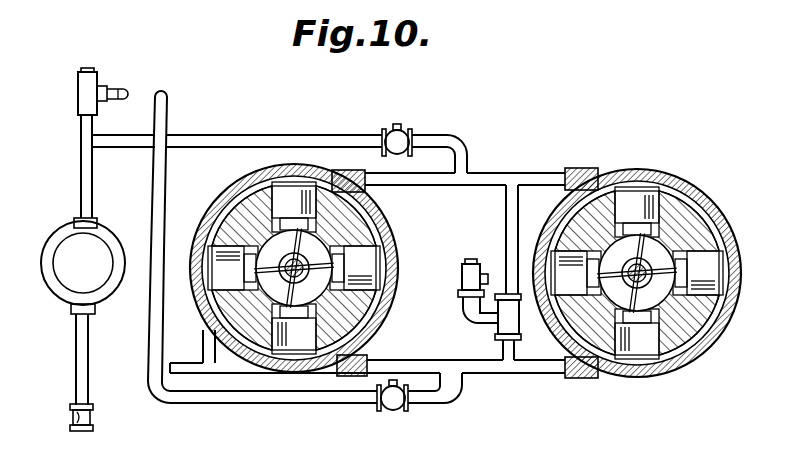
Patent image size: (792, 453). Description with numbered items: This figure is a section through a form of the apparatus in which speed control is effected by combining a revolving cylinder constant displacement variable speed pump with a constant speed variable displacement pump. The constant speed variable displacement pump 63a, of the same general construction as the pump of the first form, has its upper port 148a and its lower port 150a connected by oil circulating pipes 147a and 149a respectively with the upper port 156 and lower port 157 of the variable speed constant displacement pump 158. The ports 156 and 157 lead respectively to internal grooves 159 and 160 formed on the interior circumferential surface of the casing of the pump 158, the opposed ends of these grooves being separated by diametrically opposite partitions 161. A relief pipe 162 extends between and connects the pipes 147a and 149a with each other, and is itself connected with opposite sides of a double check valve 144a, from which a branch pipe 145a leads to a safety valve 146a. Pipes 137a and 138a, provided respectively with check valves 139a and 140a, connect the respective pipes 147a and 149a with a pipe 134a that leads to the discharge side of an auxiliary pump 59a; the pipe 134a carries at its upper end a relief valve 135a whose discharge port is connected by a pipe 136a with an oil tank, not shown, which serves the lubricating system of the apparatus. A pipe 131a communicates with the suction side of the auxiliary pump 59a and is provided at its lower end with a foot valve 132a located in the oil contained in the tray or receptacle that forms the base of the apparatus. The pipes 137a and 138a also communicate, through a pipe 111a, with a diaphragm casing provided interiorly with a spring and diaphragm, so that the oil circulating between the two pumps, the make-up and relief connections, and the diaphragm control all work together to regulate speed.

The constant speed variable displacement pump 63a is at (727, 218).
The auxiliary pump 59a is at (107, 241).
The pipe 111a is at (167, 114).
The pipe 131a is at (76, 384).
The foot valve 132a is at (93, 418).
The pipe 134a is at (80, 172).
The relief valve 135a is at (78, 90).
The pipe 136a is at (117, 87).
The pipe 137a is at (296, 136).
The pipe 138a is at (153, 181).
The check valve 139a is at (403, 139).
The check valve 140a is at (395, 404).
The double check valve 144a is at (530, 337).
The branch pipe 145a is at (464, 315).
The safety valve 146a is at (461, 283).
The oil circulating pipe 147a is at (417, 178).
The upper port 148a is at (603, 170).
The oil circulating pipe 149a is at (486, 365).
The lower port 150a is at (597, 373).
The upper port 156 is at (340, 172).
The lower port 157 is at (343, 371).
The variable speed constant displacement pump 158 is at (214, 220).
The internal groove 159 is at (247, 186).
The internal groove 160 is at (370, 352).
The partition 161 is at (384, 268).
The relief pipe 162 is at (506, 228).